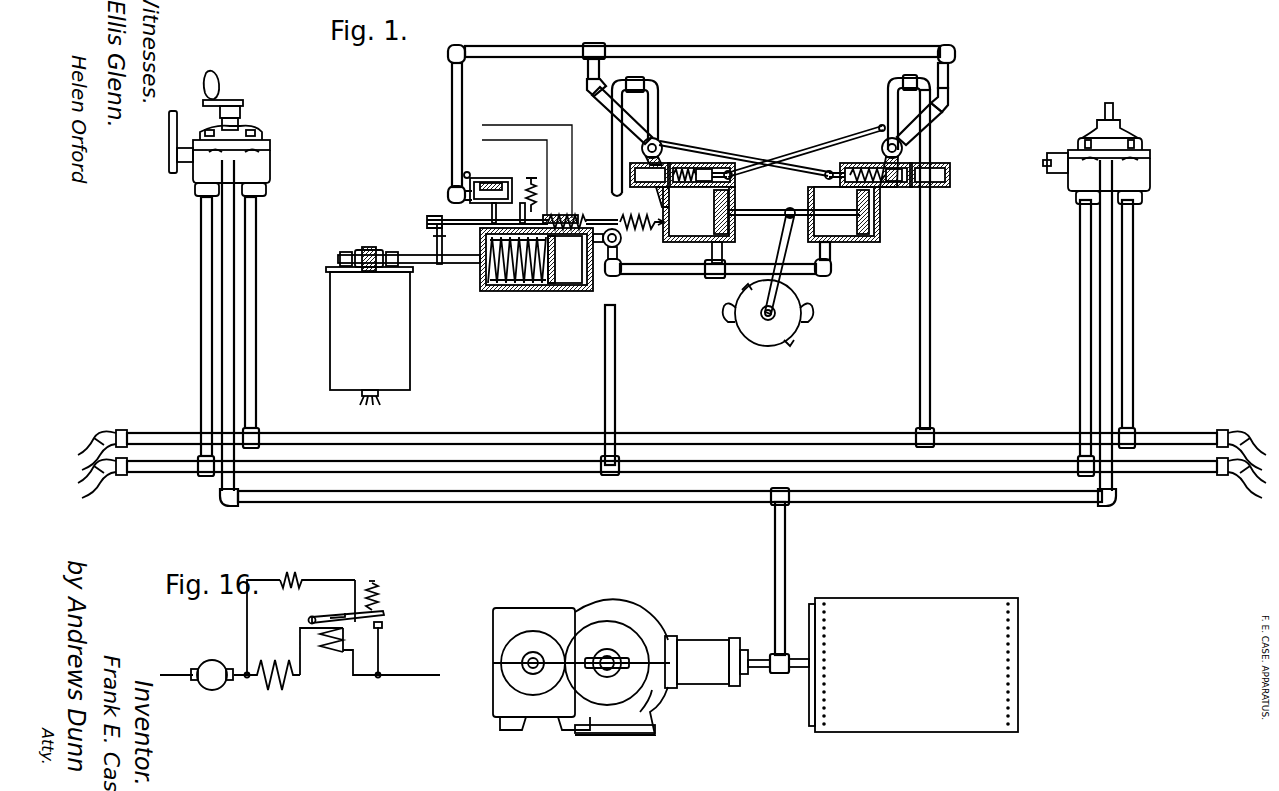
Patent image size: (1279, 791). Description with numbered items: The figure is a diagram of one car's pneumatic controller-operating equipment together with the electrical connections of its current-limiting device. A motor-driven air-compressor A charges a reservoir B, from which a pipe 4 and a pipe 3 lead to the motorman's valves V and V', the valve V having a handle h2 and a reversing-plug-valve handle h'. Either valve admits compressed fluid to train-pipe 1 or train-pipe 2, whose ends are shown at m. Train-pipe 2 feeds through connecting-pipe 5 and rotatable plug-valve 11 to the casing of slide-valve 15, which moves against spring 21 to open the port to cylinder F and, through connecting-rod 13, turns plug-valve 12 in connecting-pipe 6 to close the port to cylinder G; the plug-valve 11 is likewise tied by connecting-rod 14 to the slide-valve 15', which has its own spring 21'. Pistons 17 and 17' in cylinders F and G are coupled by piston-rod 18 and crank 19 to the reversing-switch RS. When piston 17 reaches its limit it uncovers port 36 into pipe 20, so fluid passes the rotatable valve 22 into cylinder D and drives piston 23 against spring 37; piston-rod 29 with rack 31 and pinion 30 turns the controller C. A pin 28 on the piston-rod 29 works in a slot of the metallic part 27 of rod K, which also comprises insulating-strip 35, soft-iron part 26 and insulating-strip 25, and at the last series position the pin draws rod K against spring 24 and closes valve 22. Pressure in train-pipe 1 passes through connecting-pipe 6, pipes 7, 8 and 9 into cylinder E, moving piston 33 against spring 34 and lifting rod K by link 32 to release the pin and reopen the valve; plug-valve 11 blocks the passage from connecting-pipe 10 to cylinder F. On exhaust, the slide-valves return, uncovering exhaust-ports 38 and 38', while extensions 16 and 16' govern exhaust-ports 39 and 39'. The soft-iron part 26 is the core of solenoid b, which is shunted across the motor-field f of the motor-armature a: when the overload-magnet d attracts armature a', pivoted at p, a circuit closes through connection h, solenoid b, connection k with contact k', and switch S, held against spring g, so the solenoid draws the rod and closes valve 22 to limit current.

In FIG. 1, the train-pipe 1 is at (250, 328).
In FIG. 1, the train-pipe 2 is at (203, 326).
In FIG. 1, the pipe 3 is at (234, 312).
In FIG. 1, the pipe 4 is at (785, 550).
In FIG. 1, the connecting-pipe 5 is at (612, 152).
In FIG. 1, the connecting-pipe 6 is at (888, 101).
In FIG. 1, the pipe 7 is at (940, 110).
In FIG. 1, the pipe 8 is at (746, 55).
In FIG. 1, the pipe 9 is at (455, 124).
In FIG. 1, the connecting-pipe 10 is at (611, 109).
In FIG. 1, the rotatable plug-valve 11 is at (662, 145).
In FIG. 1, the rotatable plug-valve 12 is at (903, 150).
In FIG. 1, the connecting-rod 13 is at (822, 147).
In FIG. 1, the connecting-rod 14 is at (728, 153).
In FIG. 1, the slide-valve 15 is at (701, 166).
In FIG. 1, the slide-valve 15' is at (876, 165).
In FIG. 1, the extension 16 is at (645, 183).
In FIG. 1, the extension 16' is at (935, 180).
In FIG. 1, the reversing-switch-actuating piston 17 is at (709, 212).
In FIG. 1, the reversing-switch-actuating piston 17' is at (852, 212).
In FIG. 1, the piston-rod 18 is at (770, 210).
In FIG. 1, the crank 19 is at (782, 240).
In FIG. 1, the pipe 20 is at (736, 270).
In FIG. 1, the spring 21 is at (722, 165).
In FIG. 1, the rod 21' is at (831, 166).
In FIG. 1, the rotatable valve 22 is at (622, 239).
In FIG. 1, the piston 23 is at (555, 247).
In FIG. 1, the spring 24 is at (641, 214).
In FIG. 1, the insulating-strip 25 is at (602, 212).
In FIG. 1, the soft-iron part 26 is at (578, 220).
In FIG. 1, the metallic part 27 is at (460, 220).
In FIG. 1, the pin 28 is at (445, 238).
In FIG. 1, the piston-rod 29 is at (463, 263).
In FIG. 1, the pinion 30 is at (370, 251).
In FIG. 1, the rack 31 is at (394, 252).
In FIG. 1, the rod 32 is at (530, 210).
In FIG. 1, the piston 33 is at (495, 182).
In FIG. 1, the spring 34 is at (534, 178).
In FIG. 1, the insulating-strip 35 is at (502, 210).
In FIG. 1, the port 36 is at (730, 240).
In FIG. 1, the spring 37 is at (516, 286).
In FIG. 1, the exhaust-port 38 is at (680, 163).
In FIG. 1, the spring 38' is at (860, 164).
In FIG. 1, the exhaust-port 39 is at (657, 188).
In FIG. 1, the exhaust-port 39' is at (898, 187).
In FIG. 1, the motor-driven air-compressor A is at (631, 664).
In FIG. 1, the reservoir B is at (903, 665).
In FIG. 1, the controller C is at (410, 352).
In FIG. 1, the cylinder D is at (570, 286).
In FIG. 1, the cylinder E is at (470, 200).
In FIG. 1, the cylinder F is at (700, 235).
In FIG. 1, the cylinder G is at (845, 238).
In FIG. 1, the rod K is at (433, 218).
In FIG. 1, the reversing-switch RS is at (768, 329).
In FIG. 1, the motorman's valve V is at (241, 161).
In FIG. 1, the motorman's valve V' is at (1109, 153).
In FIG. 1, the hose m is at (86, 441).
In FIG. 1, the connection h is at (527, 163).
In FIG. 16, the connection h is at (263, 627).
In FIG. 1, the valve handle h2 is at (219, 85).
In FIG. 1, the handle h' is at (168, 142).
In FIG. 1, the connection k is at (514, 169).
In FIG. 16, the contact k' is at (345, 601).
In FIG. 1, the solenoid b is at (557, 214).
In FIG. 16, the solenoid b is at (317, 575).
In FIG. 16, the motor-armature a is at (212, 682).
In FIG. 16, the armature a' is at (348, 610).
In FIG. 16, the motor-field f is at (273, 684).
In FIG. 16, the overload-magnet d is at (339, 651).
In FIG. 16, the spring g is at (380, 594).
In FIG. 16, the pivot p is at (308, 619).
In FIG. 16, the switch S is at (390, 614).